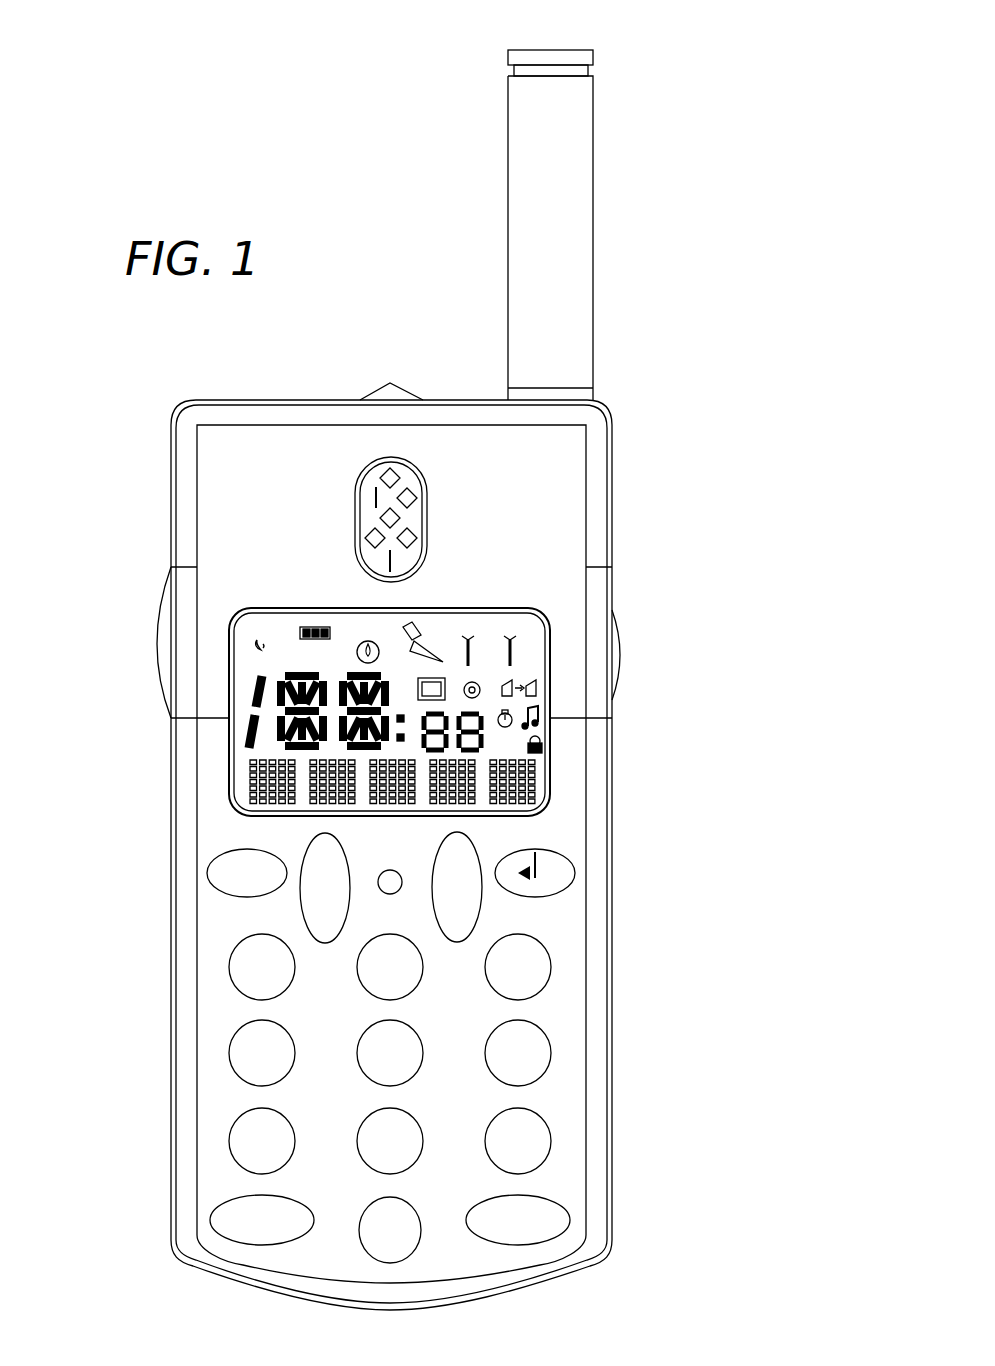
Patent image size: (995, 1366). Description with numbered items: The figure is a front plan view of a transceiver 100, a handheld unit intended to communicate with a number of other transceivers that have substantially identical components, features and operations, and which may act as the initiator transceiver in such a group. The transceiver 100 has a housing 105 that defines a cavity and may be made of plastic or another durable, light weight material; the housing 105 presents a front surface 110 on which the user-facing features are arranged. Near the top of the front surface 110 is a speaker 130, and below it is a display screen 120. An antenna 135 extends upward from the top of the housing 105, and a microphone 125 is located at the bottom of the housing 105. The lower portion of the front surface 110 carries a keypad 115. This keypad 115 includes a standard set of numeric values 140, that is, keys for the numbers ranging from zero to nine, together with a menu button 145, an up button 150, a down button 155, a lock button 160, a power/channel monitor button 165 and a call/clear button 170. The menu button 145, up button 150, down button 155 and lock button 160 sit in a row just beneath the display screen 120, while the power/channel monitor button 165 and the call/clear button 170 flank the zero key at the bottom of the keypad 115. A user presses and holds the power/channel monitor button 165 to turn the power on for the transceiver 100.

The transceiver 100 is at (368, 672).
The housing 105 is at (345, 811).
The front surface 110 is at (335, 854).
The keypad 115 is at (393, 1098).
The display screen 120 is at (460, 712).
The microphone 125 is at (398, 1290).
The speaker 130 is at (361, 462).
The antenna 135 is at (589, 202).
The numeric values 140 is at (197, 1053).
The menu button 145 is at (193, 896).
The up button 150 is at (217, 879).
The down button 155 is at (554, 880).
The lock button 160 is at (586, 894).
The power/channel monitor button 165 is at (221, 1247).
The call/clear button 170 is at (585, 1220).